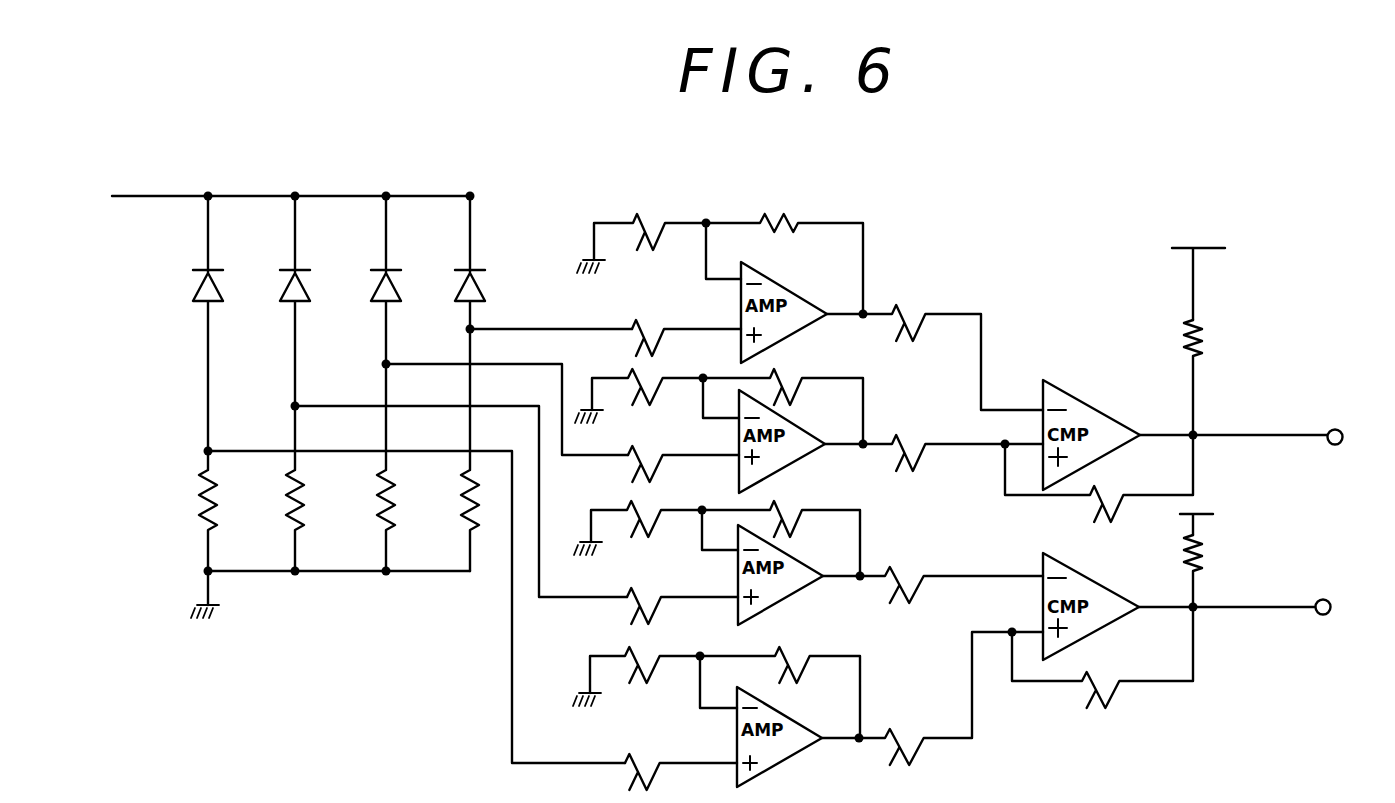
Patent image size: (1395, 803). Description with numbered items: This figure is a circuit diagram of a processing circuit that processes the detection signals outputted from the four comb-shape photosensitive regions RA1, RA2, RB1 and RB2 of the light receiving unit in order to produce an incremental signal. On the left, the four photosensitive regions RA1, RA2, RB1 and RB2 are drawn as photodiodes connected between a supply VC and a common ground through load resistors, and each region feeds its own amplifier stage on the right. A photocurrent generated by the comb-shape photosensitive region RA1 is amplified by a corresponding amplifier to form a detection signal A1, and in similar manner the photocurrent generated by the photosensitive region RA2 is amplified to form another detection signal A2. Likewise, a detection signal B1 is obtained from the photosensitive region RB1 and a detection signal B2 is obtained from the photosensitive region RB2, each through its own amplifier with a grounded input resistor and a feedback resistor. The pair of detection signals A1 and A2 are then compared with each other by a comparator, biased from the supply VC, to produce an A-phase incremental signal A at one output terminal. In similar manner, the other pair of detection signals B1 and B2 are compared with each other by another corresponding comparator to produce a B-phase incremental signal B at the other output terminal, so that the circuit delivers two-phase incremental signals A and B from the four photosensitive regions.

The comb-shape photosensitive region RA1 is at (193, 300).
The comb-shape photosensitive region RA2 is at (280, 303).
The comb-shape photosensitive region RB1 is at (373, 303).
The comb-shape photosensitive region RB2 is at (453, 300).
The detection signal B2 is at (953, 340).
The detection signal B1 is at (953, 435).
The detection signal A2 is at (951, 569).
The detection signal A1 is at (951, 698).
The B-phase incremental signal B is at (1279, 440).
The A-phase incremental signal A is at (1276, 611).
The supply voltage VC is at (665, 395).